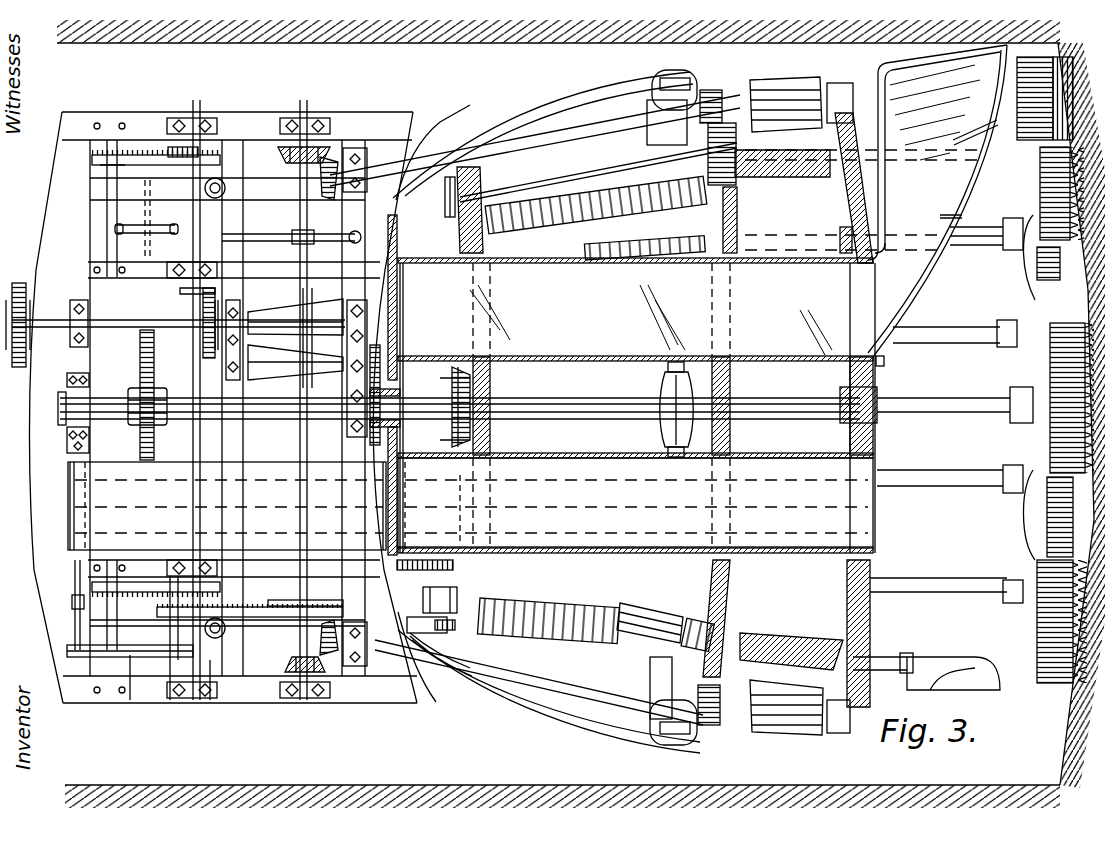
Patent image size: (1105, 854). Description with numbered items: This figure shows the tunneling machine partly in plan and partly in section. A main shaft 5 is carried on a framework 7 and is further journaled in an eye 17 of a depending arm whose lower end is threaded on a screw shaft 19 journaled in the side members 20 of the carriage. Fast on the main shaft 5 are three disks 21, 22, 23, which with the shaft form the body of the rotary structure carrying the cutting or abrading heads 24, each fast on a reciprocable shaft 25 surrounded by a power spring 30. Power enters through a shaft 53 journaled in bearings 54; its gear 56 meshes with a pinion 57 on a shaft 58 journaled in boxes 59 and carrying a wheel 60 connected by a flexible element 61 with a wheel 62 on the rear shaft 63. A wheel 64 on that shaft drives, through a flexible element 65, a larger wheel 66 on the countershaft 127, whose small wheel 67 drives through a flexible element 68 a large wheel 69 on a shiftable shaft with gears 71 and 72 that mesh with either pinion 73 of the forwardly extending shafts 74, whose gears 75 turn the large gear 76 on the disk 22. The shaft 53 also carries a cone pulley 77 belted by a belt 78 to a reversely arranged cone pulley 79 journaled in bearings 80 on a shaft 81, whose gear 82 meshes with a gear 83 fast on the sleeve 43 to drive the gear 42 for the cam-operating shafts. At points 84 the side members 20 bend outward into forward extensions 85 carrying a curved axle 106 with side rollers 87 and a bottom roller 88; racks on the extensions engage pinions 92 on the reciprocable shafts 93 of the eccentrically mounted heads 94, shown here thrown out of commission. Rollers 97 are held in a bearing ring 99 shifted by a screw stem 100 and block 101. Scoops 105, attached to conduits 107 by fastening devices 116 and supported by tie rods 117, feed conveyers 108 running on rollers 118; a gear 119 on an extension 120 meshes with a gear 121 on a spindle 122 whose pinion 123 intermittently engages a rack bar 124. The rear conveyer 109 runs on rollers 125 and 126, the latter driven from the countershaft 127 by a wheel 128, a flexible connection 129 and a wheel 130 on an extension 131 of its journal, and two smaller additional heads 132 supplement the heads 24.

The main shaft 5 is at (590, 418).
The framework 7 is at (82, 110).
The eye 17 is at (160, 420).
The screw shaft 19 is at (155, 442).
The side members 20 is at (266, 183).
The disk 21 is at (855, 203).
The disk 22 is at (636, 408).
The disk 23 is at (490, 240).
The cutting or abrading heads 24 is at (1020, 425).
The shaft 25 is at (960, 415).
The power spring 30 is at (600, 258).
The gear 42 is at (472, 375).
The sleeve 43 is at (462, 375).
The shaft 53 is at (36, 330).
The bearings 54 is at (50, 293).
The gear 56 is at (203, 350).
The pinion 57 is at (200, 293).
The shaft 58 is at (212, 198).
The boxes 59 is at (200, 118).
The wheel 60 is at (215, 150).
The flexible element 61 is at (150, 150).
The wheel 62 is at (125, 150).
The rear shaft 63 is at (104, 212).
The wheel 64 is at (115, 580).
The flexible element 65 is at (150, 580).
The wheel 66 is at (210, 580).
The wheel 67 is at (185, 618).
The flexible element 68 is at (248, 605).
The wheel 69 is at (320, 600).
The gear 71 is at (298, 675).
The gear 72 is at (322, 143).
The pinion 73 is at (345, 150).
The forwardly extending shafts 74 is at (480, 150).
The gears 75 is at (725, 730).
The large gear 76 is at (755, 625).
The cone pulley 77 is at (312, 310).
The belt 78 is at (300, 310).
The cone pulley 79 is at (295, 362).
The bearings 80 is at (226, 372).
The shaft 81 is at (383, 352).
The gear 82 is at (398, 330).
The gear 83 is at (398, 392).
The points 84 is at (405, 170).
The forward extensions 85 is at (560, 115).
The side rollers 87 is at (658, 72).
The bottom roller 88 is at (660, 385).
The pinions 92 is at (625, 638).
The reciprocable shafts 93 is at (890, 655).
The cutting or abrading heads 94 is at (985, 655).
The rollers 97 is at (785, 82).
The bearing ring 99 is at (745, 110).
The screw stem 100 is at (560, 185).
The block 101 is at (800, 182).
The scoops 105 is at (930, 285).
The curved axle 106 is at (700, 233).
The conduits 107 is at (778, 255).
The conveyer 108 is at (790, 485).
The conveyer 109 is at (227, 506).
The fastening devices 116 is at (885, 362).
The tie rods 117 is at (950, 212).
The rollers 118 is at (905, 466).
The gear 119 is at (410, 545).
The extension 120 is at (425, 593).
The gear 121 is at (460, 548).
The spindle 122 is at (455, 568).
The pinion 123 is at (450, 640).
The rack bar 124 is at (445, 675).
The roller 125 is at (363, 506).
The roller 126 is at (102, 506).
The countershaft 127 is at (211, 700).
The wheel 128 is at (172, 700).
The flexible connection 129 is at (133, 705).
The wheel 130 is at (70, 655).
The extension 131 is at (70, 608).
The heads 132 is at (950, 201).